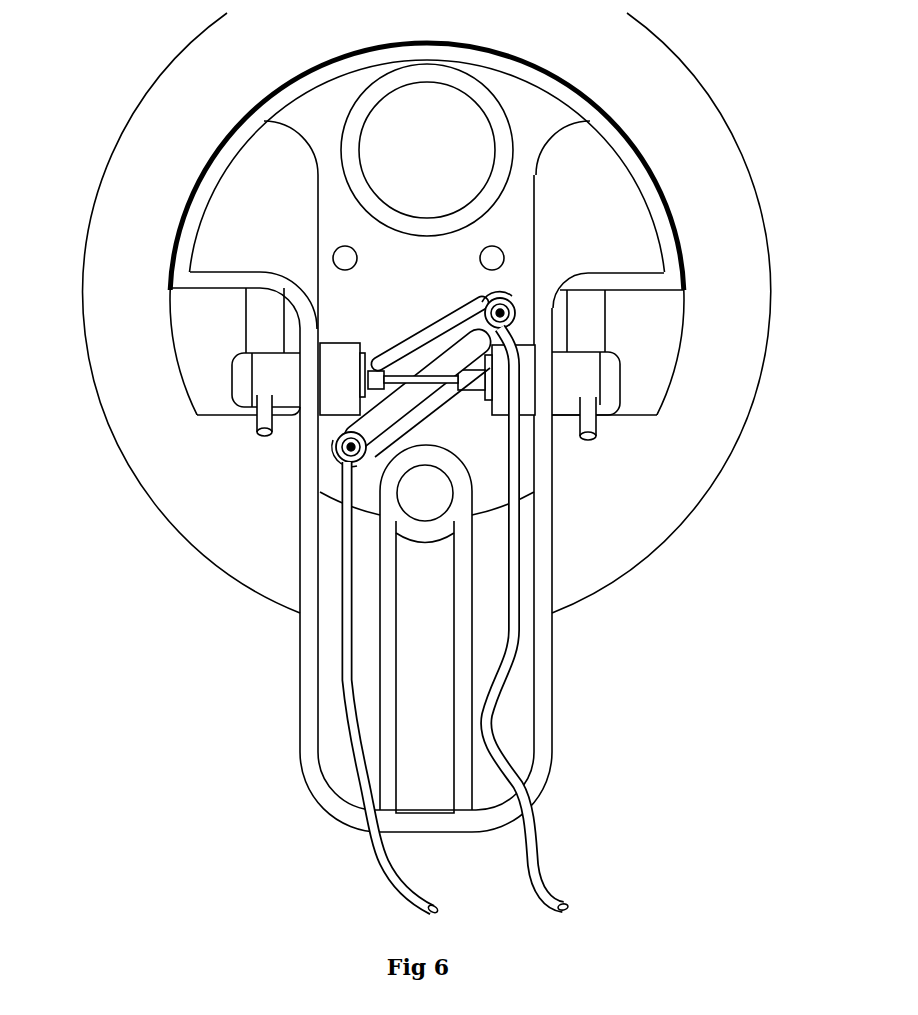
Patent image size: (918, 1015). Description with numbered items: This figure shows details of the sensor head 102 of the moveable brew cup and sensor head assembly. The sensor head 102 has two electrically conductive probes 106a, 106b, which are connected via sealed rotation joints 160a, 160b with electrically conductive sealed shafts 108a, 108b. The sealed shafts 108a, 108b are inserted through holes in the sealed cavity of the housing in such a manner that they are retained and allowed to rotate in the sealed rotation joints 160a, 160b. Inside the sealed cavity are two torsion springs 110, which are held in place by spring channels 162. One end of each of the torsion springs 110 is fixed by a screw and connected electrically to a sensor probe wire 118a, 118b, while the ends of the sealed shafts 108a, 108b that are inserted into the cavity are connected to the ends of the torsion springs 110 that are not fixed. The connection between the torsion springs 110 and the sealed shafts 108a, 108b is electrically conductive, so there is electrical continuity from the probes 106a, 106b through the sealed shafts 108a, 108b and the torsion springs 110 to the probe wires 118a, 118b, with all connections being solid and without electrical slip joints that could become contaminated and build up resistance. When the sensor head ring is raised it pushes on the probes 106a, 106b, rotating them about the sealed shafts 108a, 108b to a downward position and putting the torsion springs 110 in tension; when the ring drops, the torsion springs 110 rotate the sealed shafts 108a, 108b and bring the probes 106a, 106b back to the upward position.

The sensor head 102 is at (150, 737).
The electrically conductive probe 106a is at (580, 313).
The electrically conductive probe 106b is at (257, 322).
The electrically conductive sealed shaft 108a is at (493, 413).
The electrically conductive sealed shaft 108b is at (455, 310).
The torsion spring 110 is at (400, 393).
The sensor probe wire 118a is at (540, 860).
The sensor probe wire 118b is at (379, 860).
The sealed rotation joint 160a is at (582, 377).
The sealed rotation joint 160b is at (270, 375).
The spring channel 162 is at (460, 305).